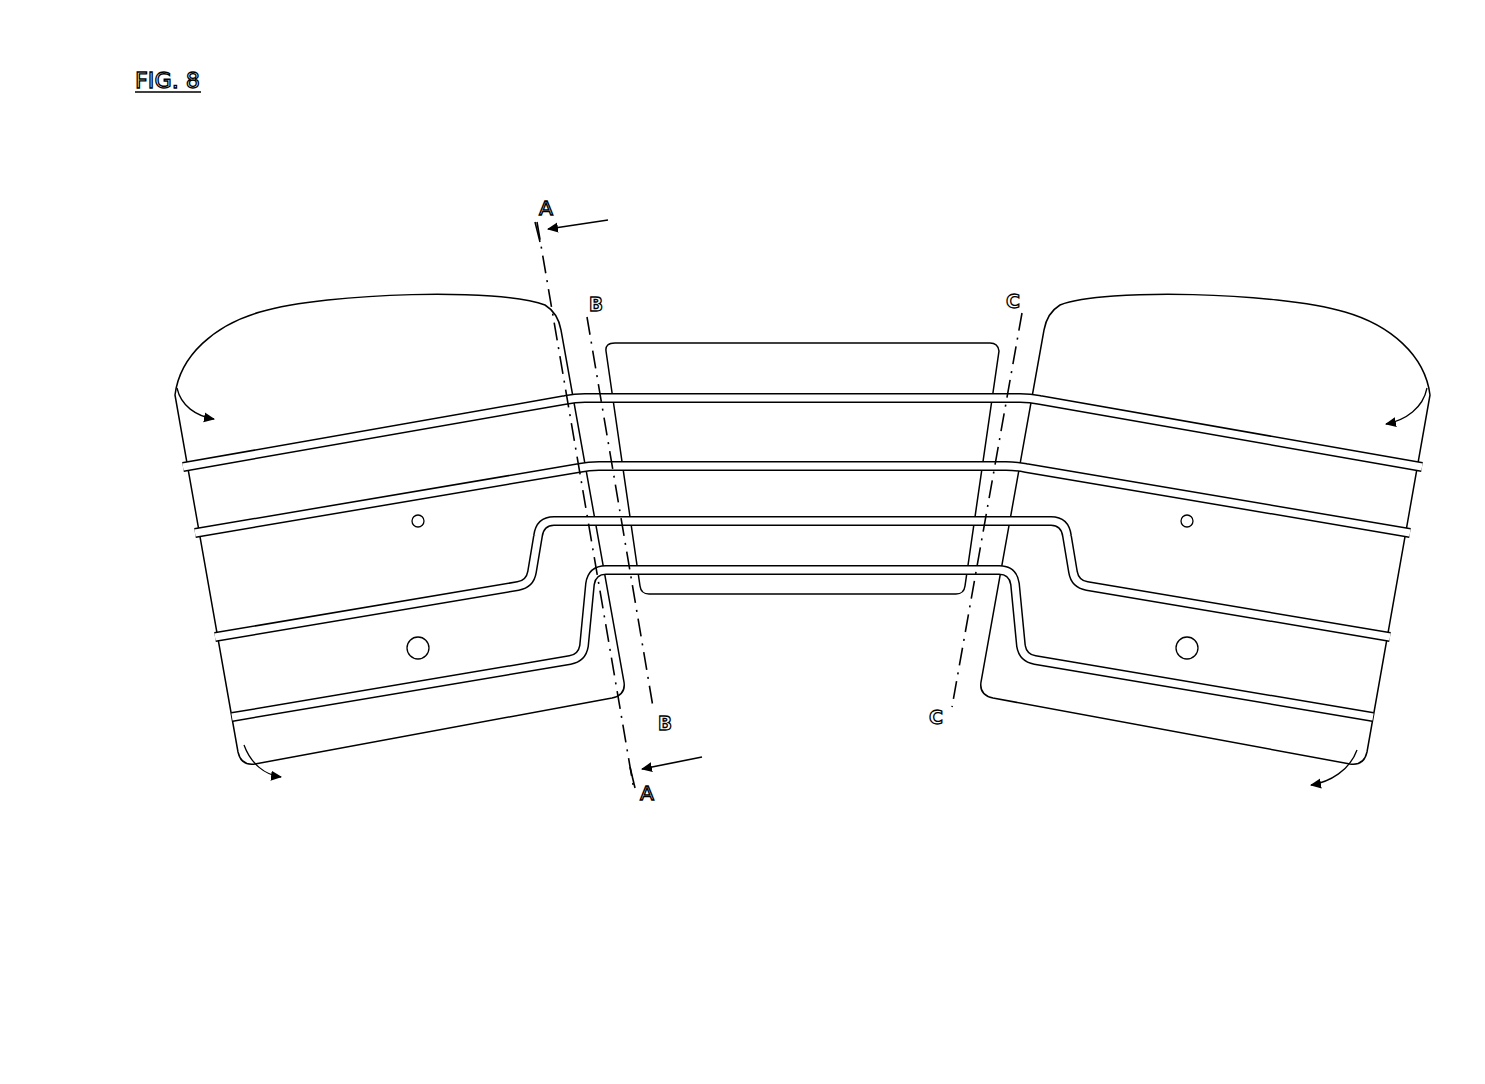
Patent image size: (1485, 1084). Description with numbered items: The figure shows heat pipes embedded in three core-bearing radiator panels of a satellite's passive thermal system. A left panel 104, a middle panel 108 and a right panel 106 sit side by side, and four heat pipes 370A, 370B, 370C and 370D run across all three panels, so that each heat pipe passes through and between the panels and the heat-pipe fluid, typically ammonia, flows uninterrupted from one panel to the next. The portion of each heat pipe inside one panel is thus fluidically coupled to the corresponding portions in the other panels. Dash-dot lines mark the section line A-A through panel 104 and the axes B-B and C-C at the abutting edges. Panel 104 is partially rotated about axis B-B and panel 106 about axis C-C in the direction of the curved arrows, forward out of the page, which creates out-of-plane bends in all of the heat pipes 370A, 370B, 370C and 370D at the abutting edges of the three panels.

The radiator panel 104 is at (284, 318).
The radiator panel 106 is at (1300, 312).
The radiator panel 108 is at (797, 342).
The heat pipe 370A is at (393, 427).
The heat pipe 370B is at (352, 506).
The heat pipe 370C is at (372, 610).
The heat pipe 370D is at (375, 692).